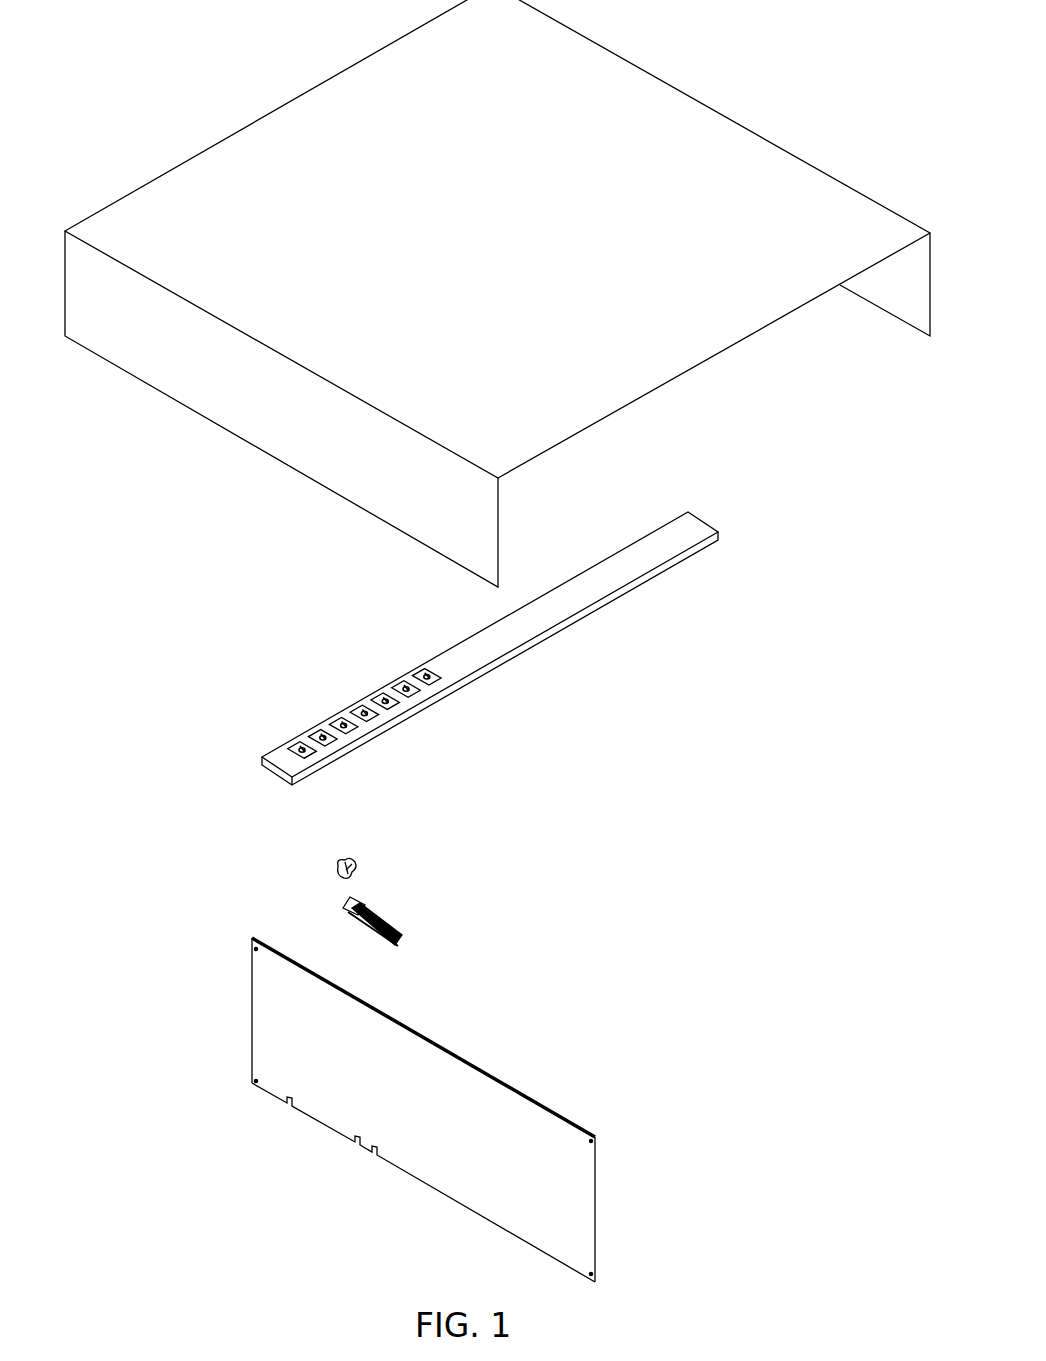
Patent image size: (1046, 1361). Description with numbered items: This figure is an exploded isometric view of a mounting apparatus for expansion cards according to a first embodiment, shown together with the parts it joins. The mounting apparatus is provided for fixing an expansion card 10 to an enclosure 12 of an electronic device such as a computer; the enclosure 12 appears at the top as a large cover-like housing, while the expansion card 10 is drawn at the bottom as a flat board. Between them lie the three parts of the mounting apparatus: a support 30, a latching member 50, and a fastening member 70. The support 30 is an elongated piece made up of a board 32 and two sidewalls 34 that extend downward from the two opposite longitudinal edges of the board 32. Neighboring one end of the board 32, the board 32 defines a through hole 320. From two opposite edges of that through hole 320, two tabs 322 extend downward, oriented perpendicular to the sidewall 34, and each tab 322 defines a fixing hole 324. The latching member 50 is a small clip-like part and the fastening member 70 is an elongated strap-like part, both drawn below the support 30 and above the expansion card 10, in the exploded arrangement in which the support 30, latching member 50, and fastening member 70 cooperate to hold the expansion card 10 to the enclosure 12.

The expansion card 10 is at (480, 1087).
The enclosure 12 is at (785, 173).
The support 30 is at (452, 675).
The board 32 is at (598, 587).
The sidewalls 34 is at (557, 628).
The through hole 320 is at (293, 743).
The tabs 322 is at (315, 752).
The fixing hole 324 is at (305, 750).
The latching member 50 is at (352, 863).
The fastening member 70 is at (393, 927).